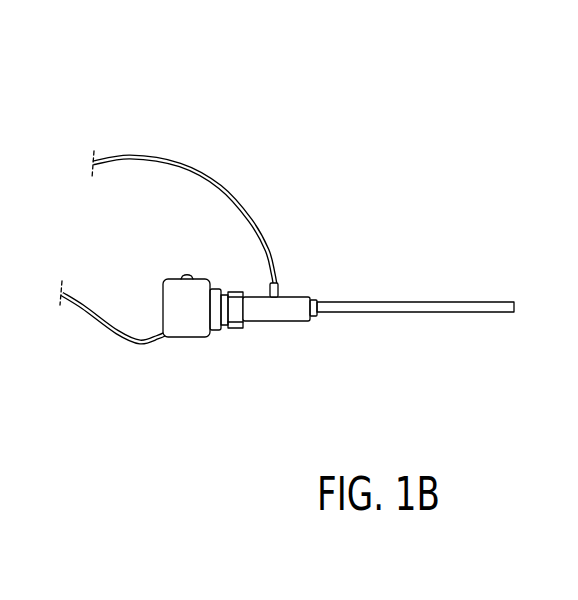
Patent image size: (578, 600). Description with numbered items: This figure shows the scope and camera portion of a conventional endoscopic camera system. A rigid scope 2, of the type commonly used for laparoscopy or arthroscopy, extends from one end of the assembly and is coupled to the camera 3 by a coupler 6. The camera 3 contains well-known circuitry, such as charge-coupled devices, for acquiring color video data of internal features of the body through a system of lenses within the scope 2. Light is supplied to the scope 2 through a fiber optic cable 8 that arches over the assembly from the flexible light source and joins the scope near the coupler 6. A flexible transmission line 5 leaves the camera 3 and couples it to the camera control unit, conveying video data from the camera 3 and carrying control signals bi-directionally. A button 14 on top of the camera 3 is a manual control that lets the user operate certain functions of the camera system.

The rigid scope 2 is at (395, 300).
The camera 3 is at (202, 338).
The flexible transmission line 5 is at (125, 343).
The coupler 6 is at (245, 327).
The fiber optic cable 8 is at (150, 158).
The button 14 is at (184, 276).